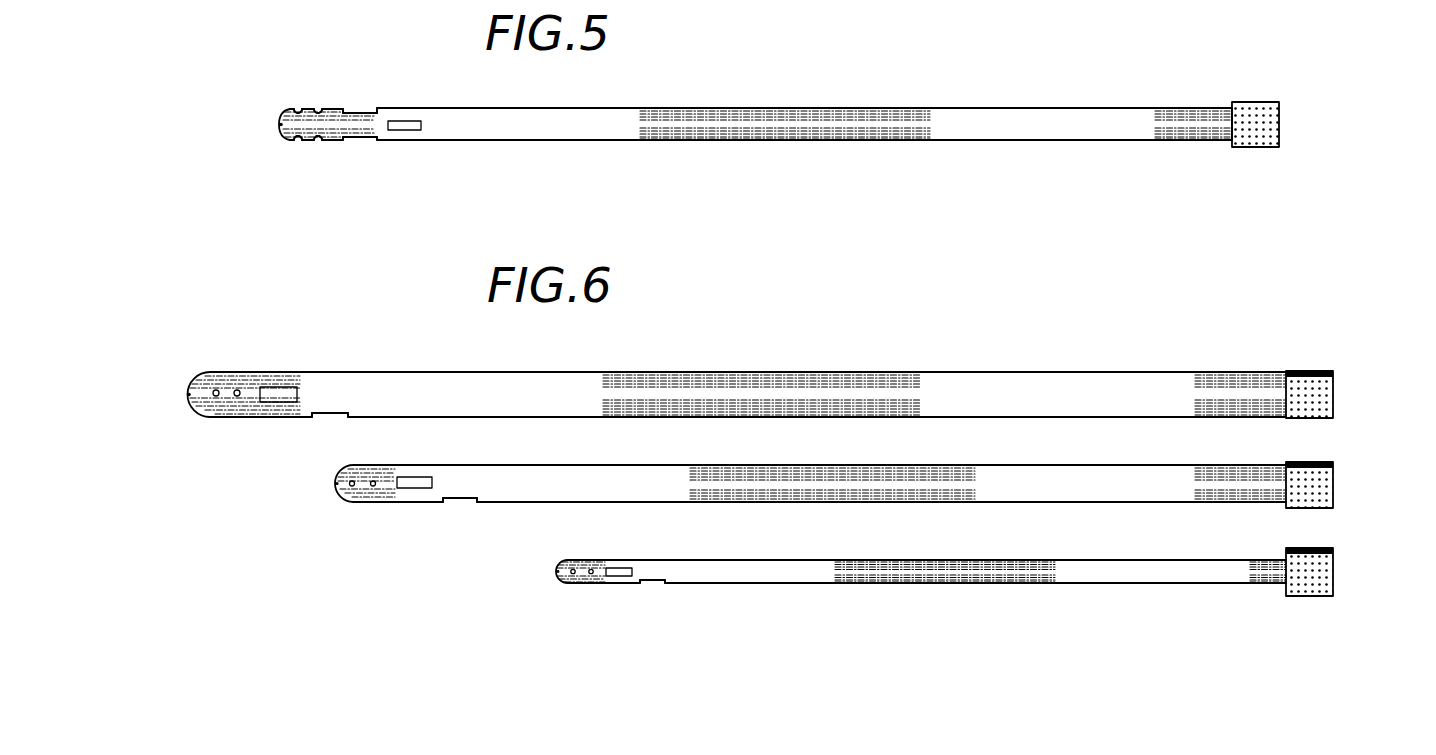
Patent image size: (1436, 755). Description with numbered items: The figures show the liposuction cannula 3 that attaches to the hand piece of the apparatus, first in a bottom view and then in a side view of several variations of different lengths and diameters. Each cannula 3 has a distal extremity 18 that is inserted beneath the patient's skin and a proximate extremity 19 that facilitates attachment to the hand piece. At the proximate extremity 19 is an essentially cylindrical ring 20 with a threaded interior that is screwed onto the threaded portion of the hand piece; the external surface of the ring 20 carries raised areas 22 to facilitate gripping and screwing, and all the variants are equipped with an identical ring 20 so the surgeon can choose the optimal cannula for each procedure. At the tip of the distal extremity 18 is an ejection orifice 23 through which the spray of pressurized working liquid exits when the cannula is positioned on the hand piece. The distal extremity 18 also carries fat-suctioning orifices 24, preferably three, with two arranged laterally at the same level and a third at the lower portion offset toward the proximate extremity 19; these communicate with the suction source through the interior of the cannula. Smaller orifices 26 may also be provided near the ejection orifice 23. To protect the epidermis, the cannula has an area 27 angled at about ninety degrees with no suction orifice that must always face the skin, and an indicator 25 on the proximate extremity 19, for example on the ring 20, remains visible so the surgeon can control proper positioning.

In FIG. 5, the liposuction cannula 3 is at (755, 76).
In FIG. 6, the liposuction cannula 3 is at (737, 515).
In FIG. 5, the distal extremity 18 is at (370, 8).
In FIG. 5, the proximate extremity 19 is at (1203, 167).
In FIG. 5, the ring 20 is at (1271, 163).
In FIG. 6, the ring 20 is at (1347, 508).
In FIG. 5, the raised areas 22 is at (1300, 115).
In FIG. 6, the raised areas 22 is at (1347, 483).
In FIG. 5, the ejection orifice 23 is at (302, 140).
In FIG. 6, the ejection orifice 23 is at (346, 505).
In FIG. 5, the fat-suctioning orifices 24 is at (402, 124).
In FIG. 6, the fat-suctioning orifices 24 is at (489, 481).
In FIG. 6, the indicator 25 is at (1343, 433).
In FIG. 5, the orifices 26 is at (317, 126).
In FIG. 6, the orifices 26 is at (405, 479).
In FIG. 6, the area 27 is at (393, 432).